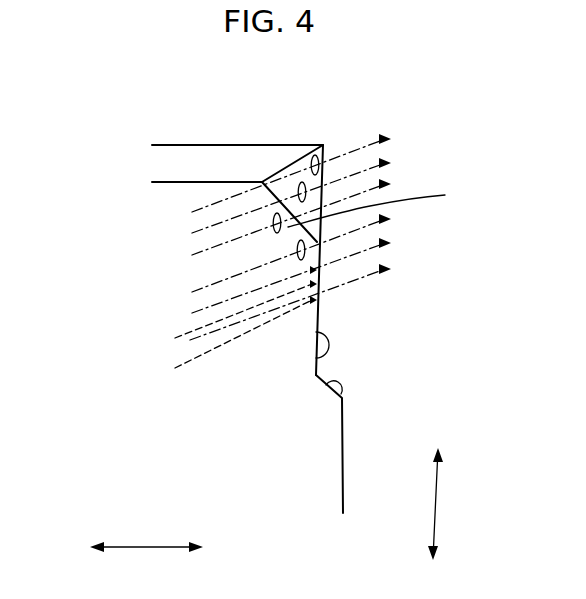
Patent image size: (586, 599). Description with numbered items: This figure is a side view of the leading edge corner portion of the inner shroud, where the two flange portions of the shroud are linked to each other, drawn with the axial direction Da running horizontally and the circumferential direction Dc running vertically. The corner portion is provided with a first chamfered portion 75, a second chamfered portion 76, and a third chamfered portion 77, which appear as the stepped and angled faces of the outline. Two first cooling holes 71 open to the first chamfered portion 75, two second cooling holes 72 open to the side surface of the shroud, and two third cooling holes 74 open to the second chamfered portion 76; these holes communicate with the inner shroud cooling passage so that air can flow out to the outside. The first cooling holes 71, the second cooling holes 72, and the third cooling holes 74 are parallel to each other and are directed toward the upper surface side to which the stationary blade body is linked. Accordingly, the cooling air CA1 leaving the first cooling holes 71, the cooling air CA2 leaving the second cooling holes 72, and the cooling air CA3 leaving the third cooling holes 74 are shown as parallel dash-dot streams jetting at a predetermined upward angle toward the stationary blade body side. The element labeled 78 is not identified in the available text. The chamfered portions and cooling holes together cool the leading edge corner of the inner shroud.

The first cooling hole 71 is at (302, 182).
The second cooling hole 72 is at (272, 226).
The third cooling hole 74 is at (232, 325).
The first chamfered portion 75 is at (379, 202).
The second chamfered portion 76 is at (313, 371).
The third chamfered portion 77 is at (193, 157).
The lower leg portion 78 is at (341, 399).
The cooling air CA1 is at (360, 142).
The cooling air CA2 is at (364, 173).
The cooling air CA3 is at (384, 247).
The axial direction Da is at (146, 563).
The circumferential direction Dc is at (419, 504).